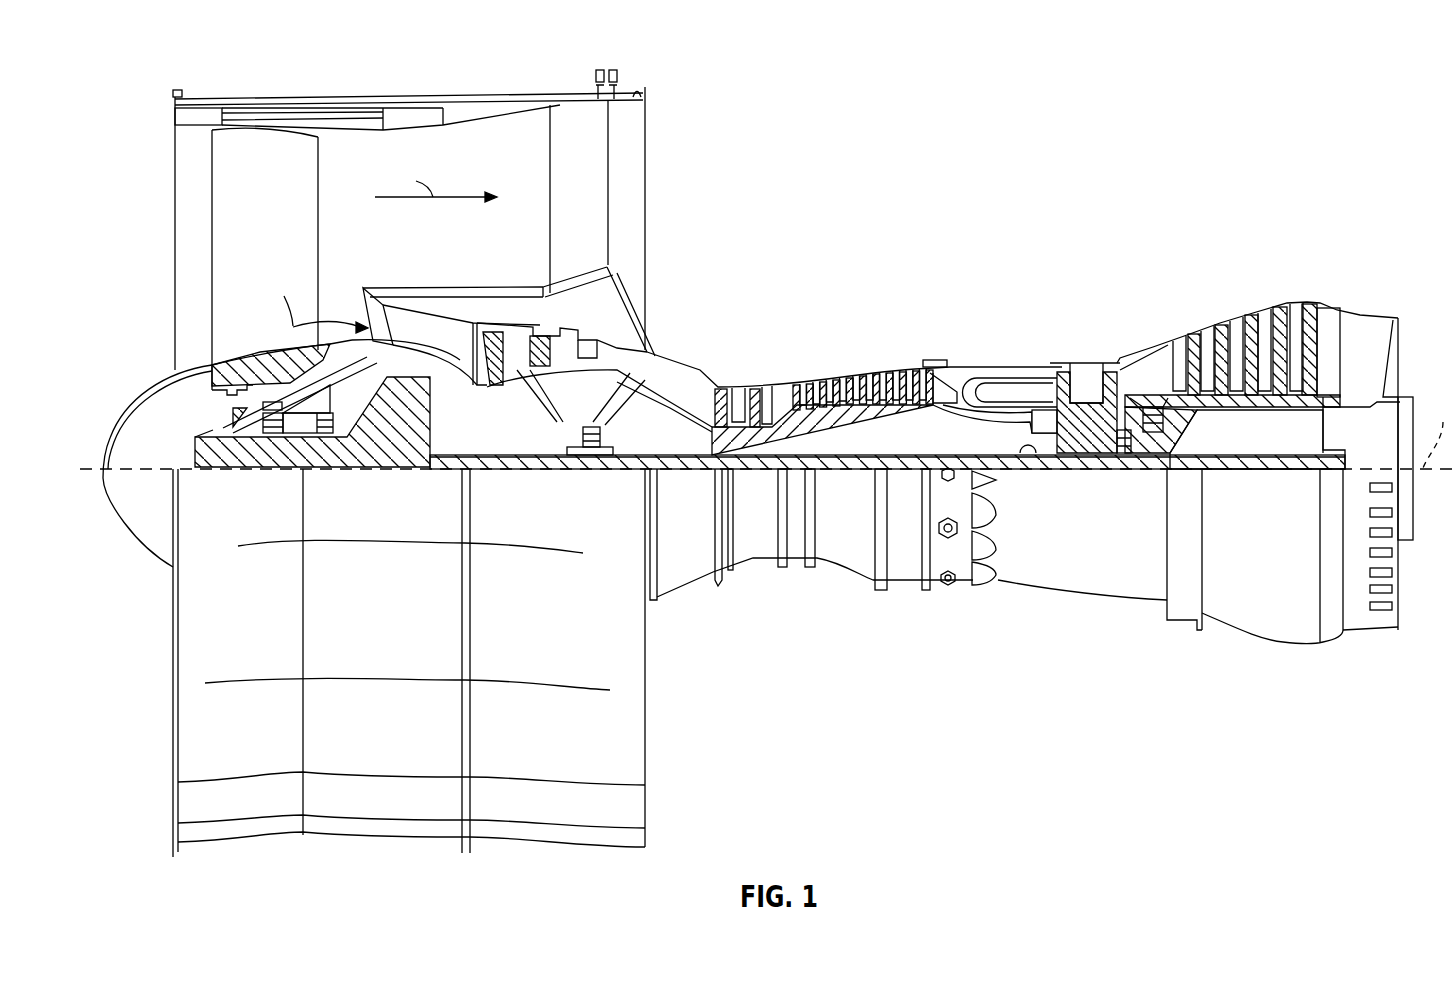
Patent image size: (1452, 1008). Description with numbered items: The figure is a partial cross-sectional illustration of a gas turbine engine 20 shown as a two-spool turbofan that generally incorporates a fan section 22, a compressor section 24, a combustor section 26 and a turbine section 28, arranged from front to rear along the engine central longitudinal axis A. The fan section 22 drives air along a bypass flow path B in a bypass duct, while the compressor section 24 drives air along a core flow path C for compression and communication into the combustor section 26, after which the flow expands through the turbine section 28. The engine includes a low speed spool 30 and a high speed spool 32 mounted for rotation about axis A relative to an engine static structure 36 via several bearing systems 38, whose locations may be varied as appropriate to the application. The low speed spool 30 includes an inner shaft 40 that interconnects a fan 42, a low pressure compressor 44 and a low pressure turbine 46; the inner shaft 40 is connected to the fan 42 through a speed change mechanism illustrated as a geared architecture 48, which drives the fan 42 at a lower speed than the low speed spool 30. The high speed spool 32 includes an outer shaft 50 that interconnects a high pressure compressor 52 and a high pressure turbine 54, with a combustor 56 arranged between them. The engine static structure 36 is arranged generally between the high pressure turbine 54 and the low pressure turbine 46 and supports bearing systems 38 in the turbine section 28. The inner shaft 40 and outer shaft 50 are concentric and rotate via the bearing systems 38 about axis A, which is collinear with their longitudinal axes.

The gas turbine engine 20 is at (766, 439).
The fan section 22 is at (635, 439).
The compressor section 24 is at (707, 353).
The combustor section 26 is at (990, 352).
The turbine section 28 is at (1231, 439).
The low speed spool 30 is at (866, 476).
The high speed spool 32 is at (917, 420).
The engine static structure 36 is at (905, 590).
The bearing systems 38 is at (277, 432).
The inner shaft 40 is at (665, 466).
The fan 42 is at (292, 231).
The low pressure compressor 44 is at (560, 337).
The low pressure turbine 46 is at (1245, 322).
The geared architecture 48 is at (417, 442).
The outer shaft 50 is at (1030, 445).
The high pressure compressor 52 is at (825, 412).
The high pressure turbine 54 is at (1088, 362).
The combustor 56 is at (1013, 390).